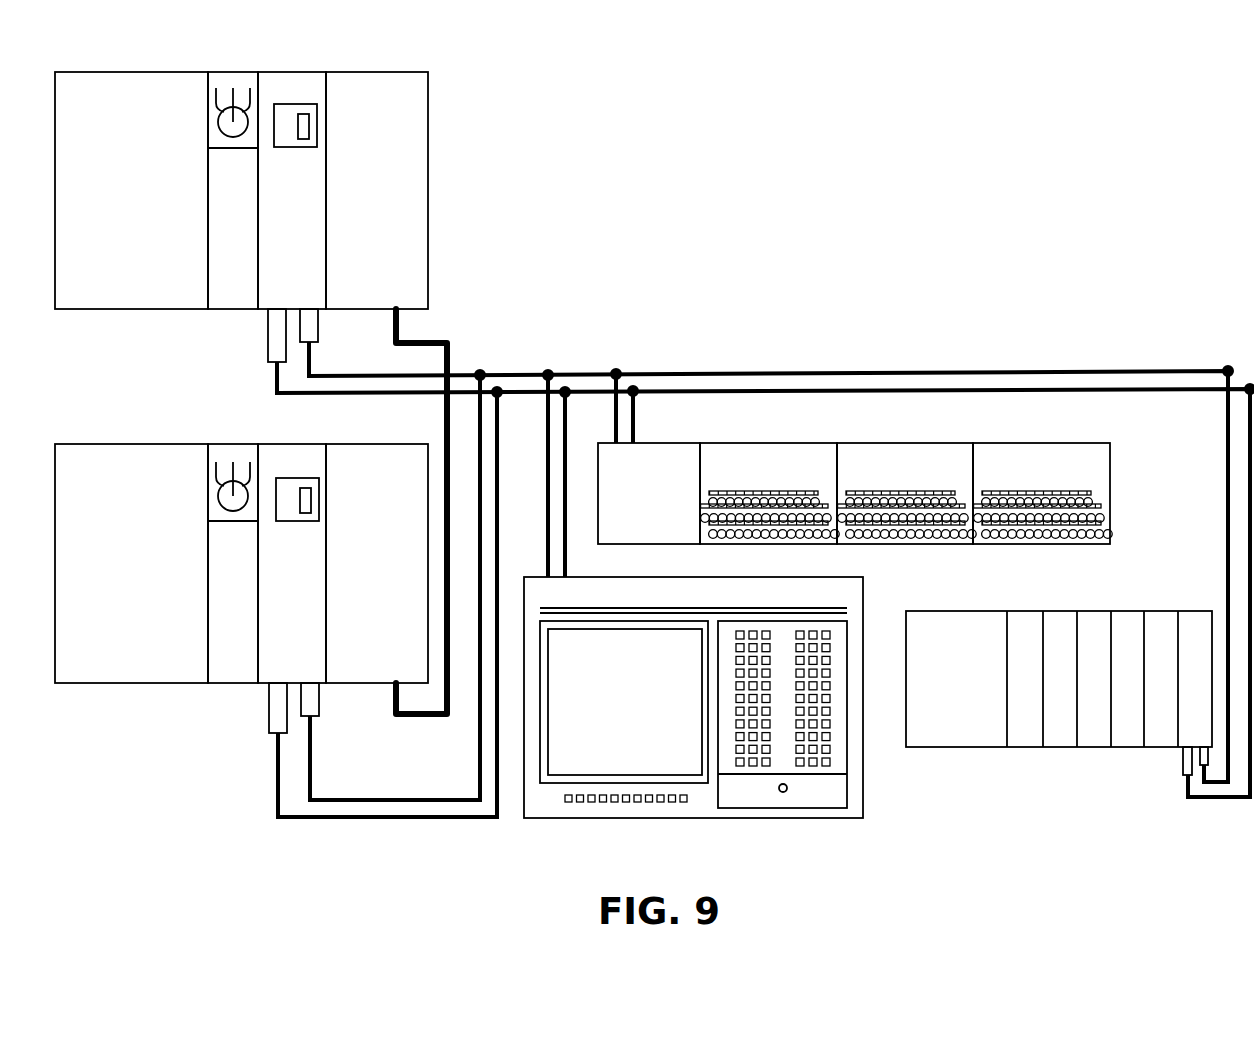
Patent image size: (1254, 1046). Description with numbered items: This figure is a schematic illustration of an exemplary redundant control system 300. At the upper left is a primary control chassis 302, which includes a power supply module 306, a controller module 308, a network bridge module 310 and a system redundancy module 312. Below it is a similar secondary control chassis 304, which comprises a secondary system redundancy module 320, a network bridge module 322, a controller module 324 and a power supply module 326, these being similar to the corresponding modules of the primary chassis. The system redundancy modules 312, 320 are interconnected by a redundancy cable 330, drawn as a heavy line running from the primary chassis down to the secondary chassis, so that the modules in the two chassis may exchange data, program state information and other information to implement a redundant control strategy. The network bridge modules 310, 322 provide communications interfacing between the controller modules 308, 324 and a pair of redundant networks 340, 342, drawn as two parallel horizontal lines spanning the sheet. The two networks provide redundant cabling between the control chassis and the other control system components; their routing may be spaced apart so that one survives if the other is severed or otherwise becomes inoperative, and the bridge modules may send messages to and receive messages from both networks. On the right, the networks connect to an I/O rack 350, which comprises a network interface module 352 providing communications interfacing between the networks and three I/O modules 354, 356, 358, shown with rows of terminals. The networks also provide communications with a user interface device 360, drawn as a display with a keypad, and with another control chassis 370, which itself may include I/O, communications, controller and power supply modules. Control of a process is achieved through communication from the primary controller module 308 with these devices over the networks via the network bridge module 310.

The redundant control system 300 is at (978, 167).
The primary control chassis 302 is at (483, 156).
The secondary control chassis 304 is at (112, 730).
The power supply module 306 is at (123, 71).
The controller module 308 is at (223, 310).
The network bridge module 310 is at (293, 70).
The system redundancy module 312 is at (397, 70).
The secondary system redundancy module 320 is at (347, 443).
The network bridge module 322 is at (274, 443).
The controller module 324 is at (225, 443).
The power supply module 326 is at (127, 684).
The redundancy cable 330 is at (448, 340).
The network 340 is at (633, 373).
The network 342 is at (668, 392).
The I/O rack 350 is at (1170, 557).
The network interface module 352 is at (635, 545).
The I/O module 354 is at (770, 443).
The I/O module 356 is at (908, 443).
The I/O module 358 is at (1045, 443).
The user interface device 360 is at (718, 818).
The control chassis 370 is at (1025, 782).